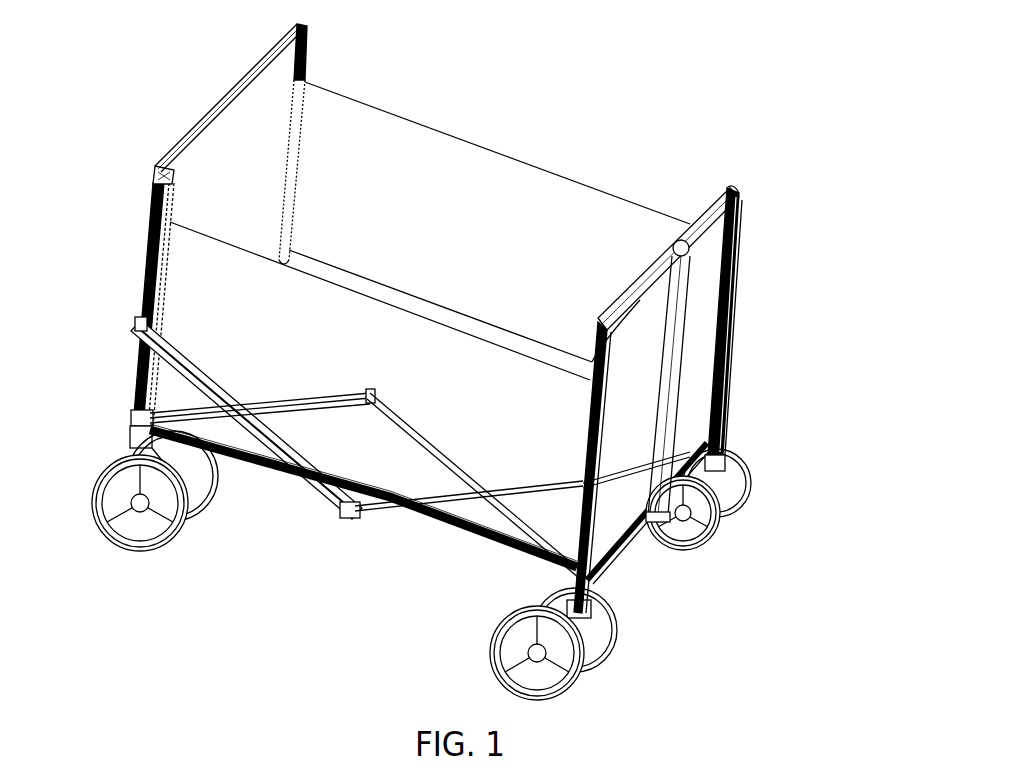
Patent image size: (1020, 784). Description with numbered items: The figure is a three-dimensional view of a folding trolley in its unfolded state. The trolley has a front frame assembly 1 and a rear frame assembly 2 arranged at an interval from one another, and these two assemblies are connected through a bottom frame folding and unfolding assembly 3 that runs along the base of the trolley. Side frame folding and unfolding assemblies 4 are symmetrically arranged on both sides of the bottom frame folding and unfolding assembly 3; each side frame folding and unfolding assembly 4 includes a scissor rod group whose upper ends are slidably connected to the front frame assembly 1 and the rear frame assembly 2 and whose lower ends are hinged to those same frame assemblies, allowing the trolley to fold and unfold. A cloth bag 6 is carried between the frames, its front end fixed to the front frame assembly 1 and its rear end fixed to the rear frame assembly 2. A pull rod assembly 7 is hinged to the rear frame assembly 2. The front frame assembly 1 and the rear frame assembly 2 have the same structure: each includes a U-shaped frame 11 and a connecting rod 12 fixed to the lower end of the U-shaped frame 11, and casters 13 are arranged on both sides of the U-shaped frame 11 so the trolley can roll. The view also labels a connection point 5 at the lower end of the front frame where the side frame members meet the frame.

The front frame assembly 1 is at (143, 270).
The rear frame assembly 2 is at (732, 272).
The bottom frame folding and unfolding assembly 3 is at (470, 533).
The side frame folding and unfolding assembly 4 is at (307, 477).
The connecting joint 5 is at (133, 417).
The cloth bag 6 is at (443, 163).
The pull rod assembly 7 is at (680, 360).
The U-shaped frame 11 is at (723, 387).
The connecting rod 12 is at (610, 560).
The caster 13 is at (742, 495).